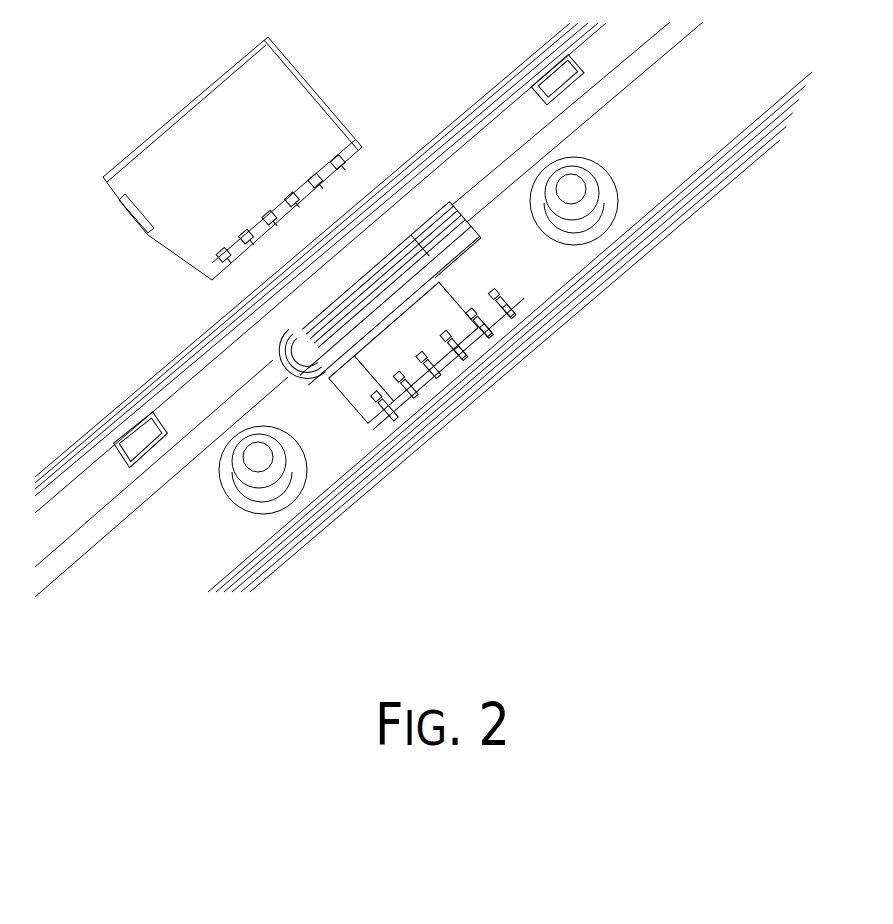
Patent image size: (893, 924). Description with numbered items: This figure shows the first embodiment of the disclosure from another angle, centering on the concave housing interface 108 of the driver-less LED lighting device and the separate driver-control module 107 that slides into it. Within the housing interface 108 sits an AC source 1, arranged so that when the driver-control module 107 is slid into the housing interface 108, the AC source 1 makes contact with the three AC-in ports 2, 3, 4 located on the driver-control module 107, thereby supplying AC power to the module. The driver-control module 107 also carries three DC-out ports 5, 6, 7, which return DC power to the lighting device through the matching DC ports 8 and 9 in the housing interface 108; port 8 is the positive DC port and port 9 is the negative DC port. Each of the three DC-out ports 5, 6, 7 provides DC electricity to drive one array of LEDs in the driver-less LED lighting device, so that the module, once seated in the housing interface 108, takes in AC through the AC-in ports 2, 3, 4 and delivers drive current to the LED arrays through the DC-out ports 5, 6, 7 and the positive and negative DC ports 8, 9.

The AC source 1 is at (400, 421).
The AC-in port 2 is at (211, 233).
The AC-in port 3 is at (233, 217).
The AC-in port 4 is at (259, 198).
The DC-out port 5 is at (281, 174).
The DC-out port 6 is at (304, 155).
The DC-out port 7 is at (325, 142).
The positive DC port 8 is at (468, 352).
The negative DC port 9 is at (473, 358).
The driver-control module 107 is at (176, 146).
The housing interface 108 is at (390, 304).